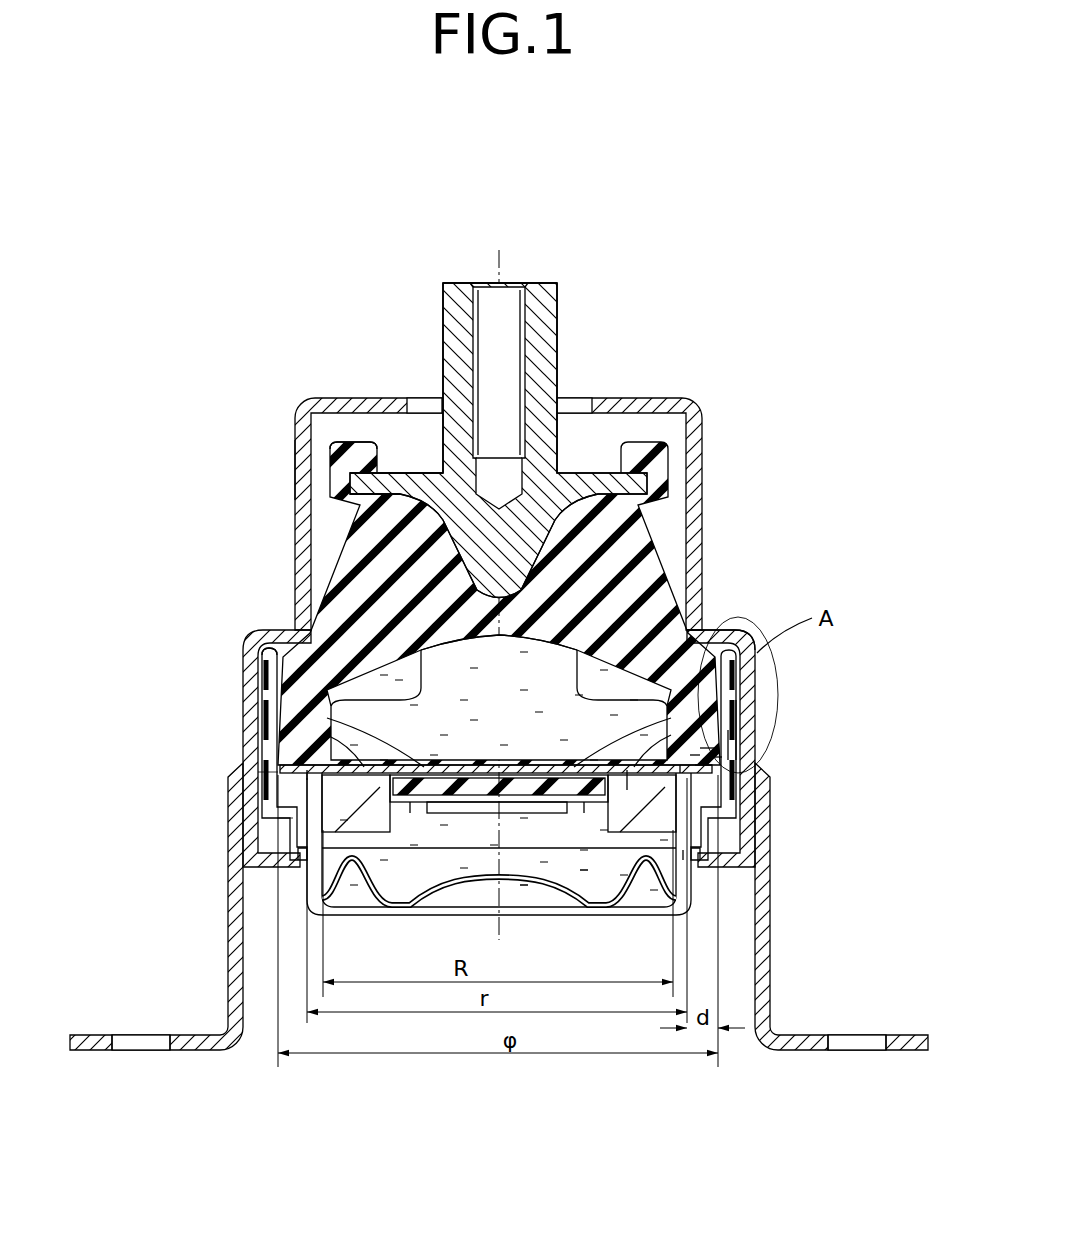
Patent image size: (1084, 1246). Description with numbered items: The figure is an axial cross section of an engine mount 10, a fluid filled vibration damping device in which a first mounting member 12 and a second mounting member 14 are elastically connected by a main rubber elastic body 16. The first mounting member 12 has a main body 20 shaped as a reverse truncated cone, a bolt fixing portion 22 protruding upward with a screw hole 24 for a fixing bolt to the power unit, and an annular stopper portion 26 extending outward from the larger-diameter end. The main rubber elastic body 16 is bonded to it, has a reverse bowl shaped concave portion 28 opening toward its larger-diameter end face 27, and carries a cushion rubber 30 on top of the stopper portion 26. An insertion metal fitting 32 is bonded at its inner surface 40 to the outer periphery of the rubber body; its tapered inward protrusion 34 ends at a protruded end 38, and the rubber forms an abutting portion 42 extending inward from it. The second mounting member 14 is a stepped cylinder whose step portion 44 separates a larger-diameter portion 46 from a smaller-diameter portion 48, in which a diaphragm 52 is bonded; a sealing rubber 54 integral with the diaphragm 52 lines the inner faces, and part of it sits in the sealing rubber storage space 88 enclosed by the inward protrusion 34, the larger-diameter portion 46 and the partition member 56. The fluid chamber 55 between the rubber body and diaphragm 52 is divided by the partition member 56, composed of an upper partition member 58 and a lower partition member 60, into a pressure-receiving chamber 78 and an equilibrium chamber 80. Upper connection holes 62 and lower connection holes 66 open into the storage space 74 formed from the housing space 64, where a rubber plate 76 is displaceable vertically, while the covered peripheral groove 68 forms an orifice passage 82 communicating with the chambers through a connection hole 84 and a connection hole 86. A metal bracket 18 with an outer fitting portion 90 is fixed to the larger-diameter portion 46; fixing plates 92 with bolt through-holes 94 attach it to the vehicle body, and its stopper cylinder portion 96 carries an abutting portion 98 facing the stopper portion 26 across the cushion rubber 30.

The engine mount 10 is at (723, 348).
The first mounting member 12 is at (563, 300).
The second mounting member 14 is at (745, 672).
The main rubber elastic body 16 is at (590, 575).
The metal bracket 18 is at (717, 417).
The main body 20 is at (490, 553).
The bolt fixing portion 22 is at (453, 322).
The screw hole 24 is at (482, 290).
The stopper portion 26 is at (381, 487).
The larger-diameter end face 27 is at (703, 772).
The concave portion 28 is at (360, 695).
The cushion rubber 30 is at (352, 456).
The insertion metal fitting 32 is at (722, 698).
The inward protrusion 34 is at (707, 752).
The protruded end 38 is at (693, 757).
The inner surface 40 is at (713, 658).
The abutting portion 42 is at (687, 767).
The step portion 44 is at (708, 840).
The larger-diameter portion 46 is at (735, 717).
The smaller-diameter portion 48 is at (707, 848).
The diaphragm 52 is at (537, 887).
The sealing rubber 54 is at (732, 742).
The fluid chamber 55 is at (593, 645).
The partition member 56 is at (260, 772).
The upper partition member 58 is at (360, 730).
The lower partition member 60 is at (300, 798).
The upper connection holes 62 is at (357, 727).
The housing space 64 is at (600, 767).
The lower connection holes 66 is at (420, 810).
The peripheral groove 68 is at (338, 792).
The storage space 74 is at (478, 777).
The rubber plate 76 is at (540, 780).
The pressure-receiving chamber 78 is at (597, 693).
The equilibrium chamber 80 is at (582, 875).
The orifice passage 82 is at (683, 860).
The connection hole 84 is at (627, 770).
The connection hole 86 is at (312, 770).
The sealing rubber storage space 88 is at (715, 757).
The outer fitting portion 90 is at (262, 660).
The fixing plates 92 is at (237, 860).
The bolt through-holes 94 is at (160, 1040).
The stopper cylinder portion 96 is at (300, 455).
The abutting portion 98 is at (356, 405).